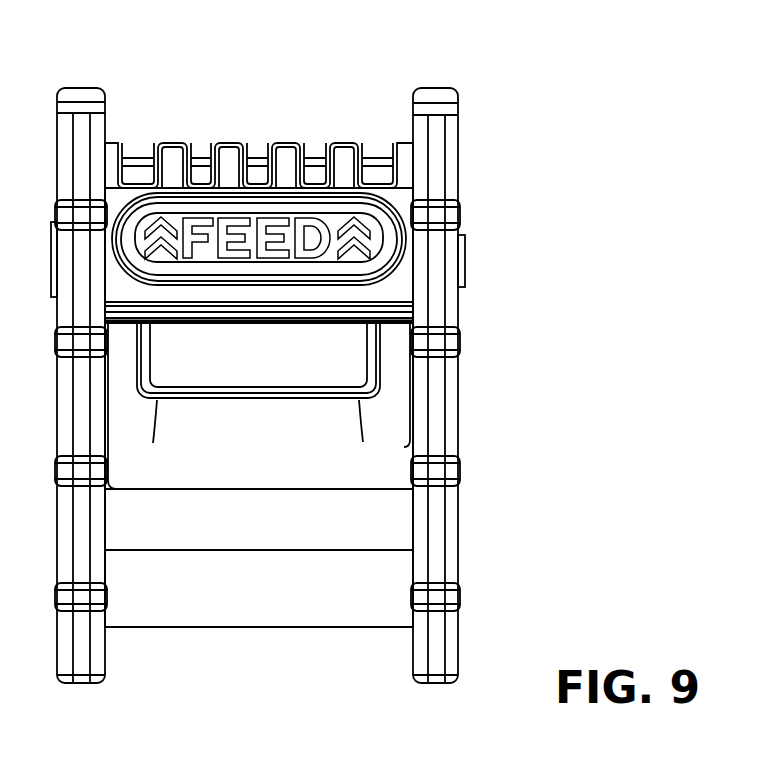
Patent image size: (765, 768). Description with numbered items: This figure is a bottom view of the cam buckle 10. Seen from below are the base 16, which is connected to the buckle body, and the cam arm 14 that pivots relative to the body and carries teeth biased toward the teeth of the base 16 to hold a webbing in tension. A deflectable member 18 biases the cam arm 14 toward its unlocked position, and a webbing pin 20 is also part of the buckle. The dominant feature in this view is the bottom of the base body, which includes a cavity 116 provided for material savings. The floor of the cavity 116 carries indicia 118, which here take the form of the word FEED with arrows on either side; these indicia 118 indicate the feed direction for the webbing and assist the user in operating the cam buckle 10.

The cam buckle 10 is at (518, 144).
The cam arm 14 is at (380, 463).
The base 16 is at (402, 170).
The deflectable member 18 is at (362, 375).
The webbing pin 20 is at (245, 610).
The cavity 116 is at (147, 213).
The indicia 118 is at (205, 218).